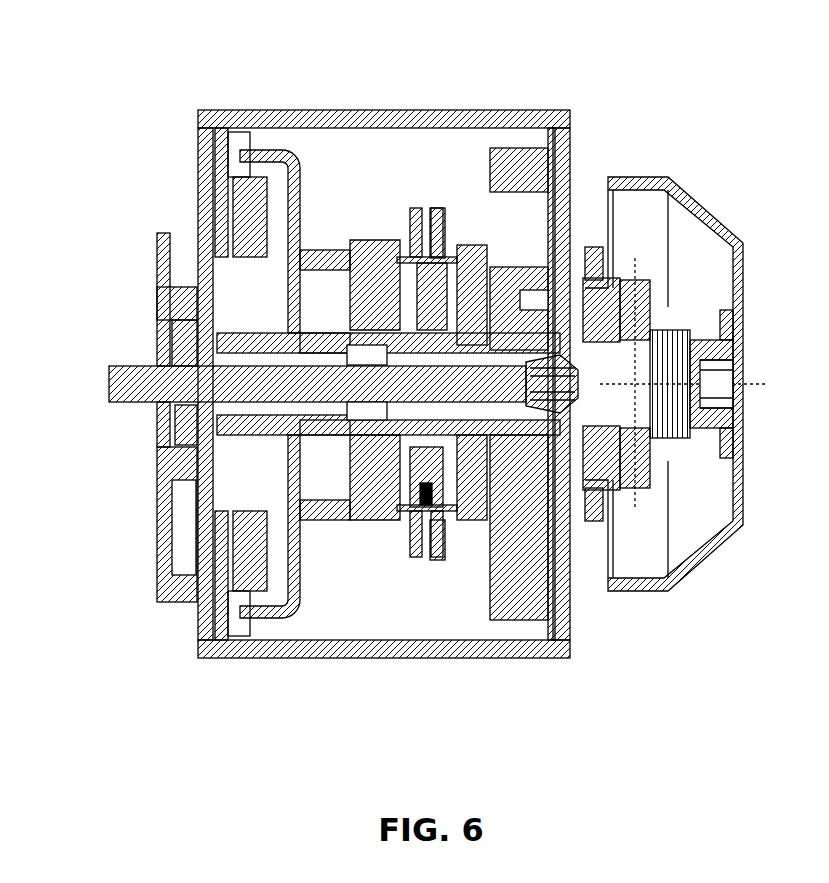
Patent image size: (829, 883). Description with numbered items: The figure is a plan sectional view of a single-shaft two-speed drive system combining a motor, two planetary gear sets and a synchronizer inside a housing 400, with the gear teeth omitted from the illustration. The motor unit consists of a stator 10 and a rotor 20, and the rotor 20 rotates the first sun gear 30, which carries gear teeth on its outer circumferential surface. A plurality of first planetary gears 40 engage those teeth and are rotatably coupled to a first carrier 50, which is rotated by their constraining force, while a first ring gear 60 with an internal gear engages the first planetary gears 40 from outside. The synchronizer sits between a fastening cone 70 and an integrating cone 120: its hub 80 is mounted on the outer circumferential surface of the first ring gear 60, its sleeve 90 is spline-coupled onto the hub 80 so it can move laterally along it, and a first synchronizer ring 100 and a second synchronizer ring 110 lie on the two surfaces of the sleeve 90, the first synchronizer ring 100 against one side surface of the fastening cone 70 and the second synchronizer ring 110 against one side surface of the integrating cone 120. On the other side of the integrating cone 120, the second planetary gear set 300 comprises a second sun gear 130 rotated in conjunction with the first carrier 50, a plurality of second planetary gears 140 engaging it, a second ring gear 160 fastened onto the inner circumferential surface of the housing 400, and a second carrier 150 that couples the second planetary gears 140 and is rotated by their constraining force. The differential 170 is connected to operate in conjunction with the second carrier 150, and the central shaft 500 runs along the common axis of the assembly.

The stator 10 is at (235, 525).
The rotor 20 is at (288, 578).
The first sun gear 30 is at (330, 333).
The first planetary gears 40 is at (325, 435).
The first carrier 50 is at (343, 497).
The first ring gear 60 is at (378, 265).
The fastening cone 70 is at (385, 262).
The hub 80 is at (437, 292).
The sleeve 90 is at (427, 228).
The first synchronizer ring 100 is at (395, 507).
The second synchronizer ring 110 is at (450, 513).
The integrating cone 120 is at (433, 286).
The second sun gear 130 is at (513, 305).
The second planetary gears 140 is at (540, 555).
The second carrier 150 is at (580, 490).
The second ring gear 160 is at (492, 192).
The differential 170 is at (545, 460).
The second planetary gear set 300 is at (762, 62).
The housing 400 is at (200, 143).
The shaft 500 is at (123, 392).